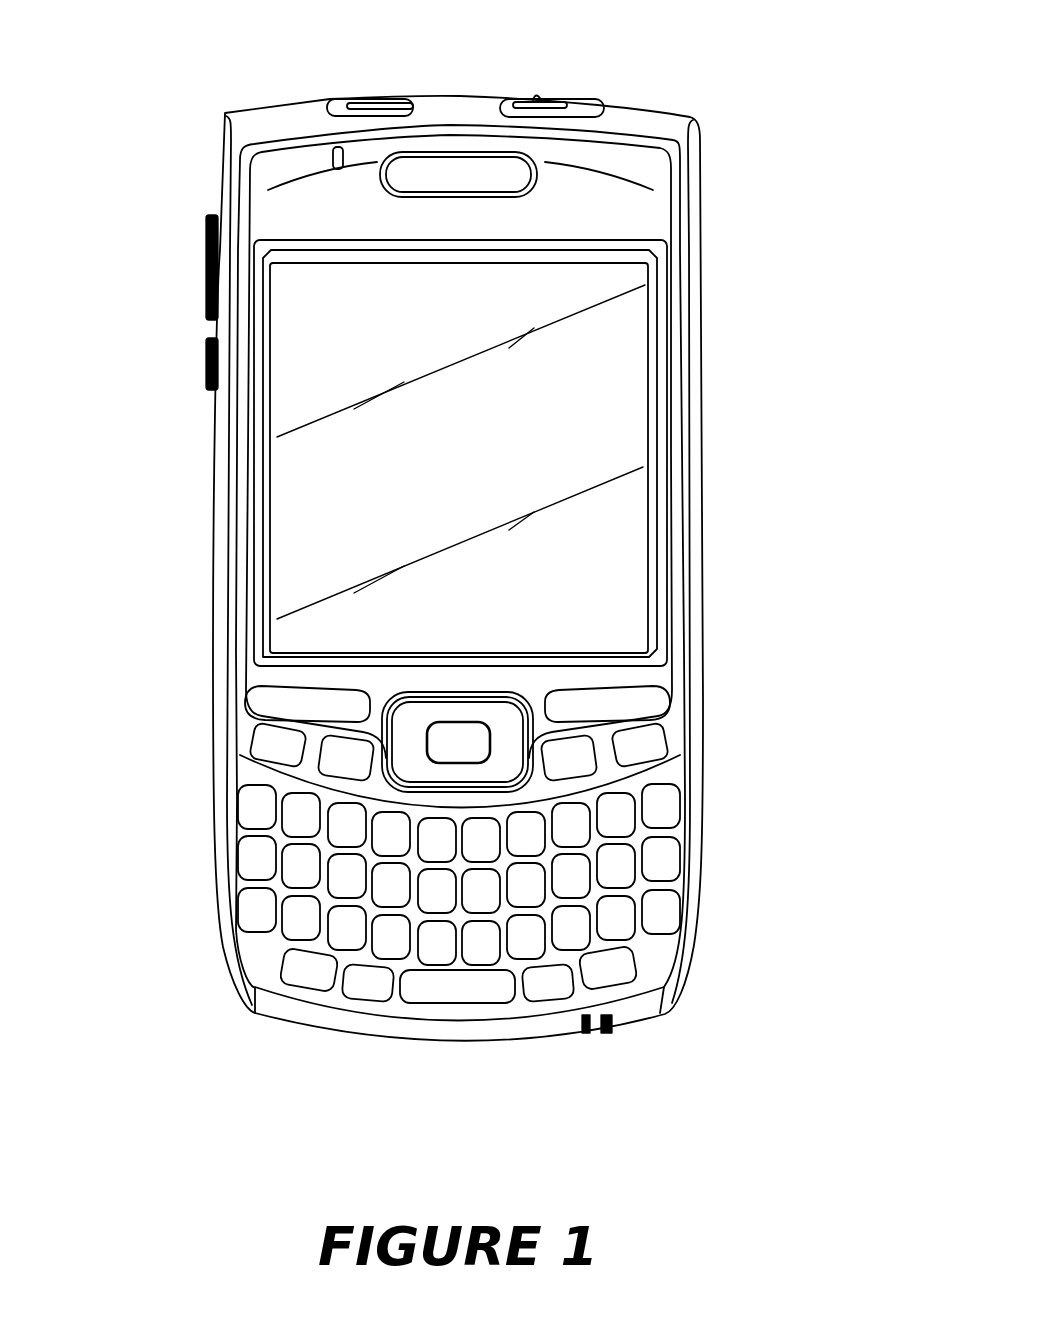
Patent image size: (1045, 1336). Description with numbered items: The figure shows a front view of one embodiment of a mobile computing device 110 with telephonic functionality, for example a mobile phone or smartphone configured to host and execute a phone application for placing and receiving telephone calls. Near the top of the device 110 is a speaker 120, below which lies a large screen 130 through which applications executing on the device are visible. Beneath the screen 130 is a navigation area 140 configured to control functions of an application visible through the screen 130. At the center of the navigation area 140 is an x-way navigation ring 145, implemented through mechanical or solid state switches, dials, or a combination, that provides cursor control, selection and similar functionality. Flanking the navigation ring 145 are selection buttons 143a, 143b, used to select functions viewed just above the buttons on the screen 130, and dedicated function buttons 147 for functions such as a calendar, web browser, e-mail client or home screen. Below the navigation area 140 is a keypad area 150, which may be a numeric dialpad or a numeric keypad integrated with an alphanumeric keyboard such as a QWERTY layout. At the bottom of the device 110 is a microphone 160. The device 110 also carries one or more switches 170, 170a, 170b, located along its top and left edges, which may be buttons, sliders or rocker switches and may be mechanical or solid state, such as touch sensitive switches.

The mobile computing device 110 is at (699, 129).
The speaker 120 is at (455, 162).
The screen 130 is at (613, 413).
The navigation area 140 is at (499, 695).
The selection button 143a is at (273, 694).
The selection button 143b is at (627, 702).
The navigation ring 145 is at (503, 720).
The dedicated function buttons 147 is at (340, 762).
The keypad area 150 is at (713, 793).
The microphone 160 is at (605, 1042).
The switch 170 is at (547, 95).
The switch 170a is at (202, 253).
The switch 170b is at (205, 365).